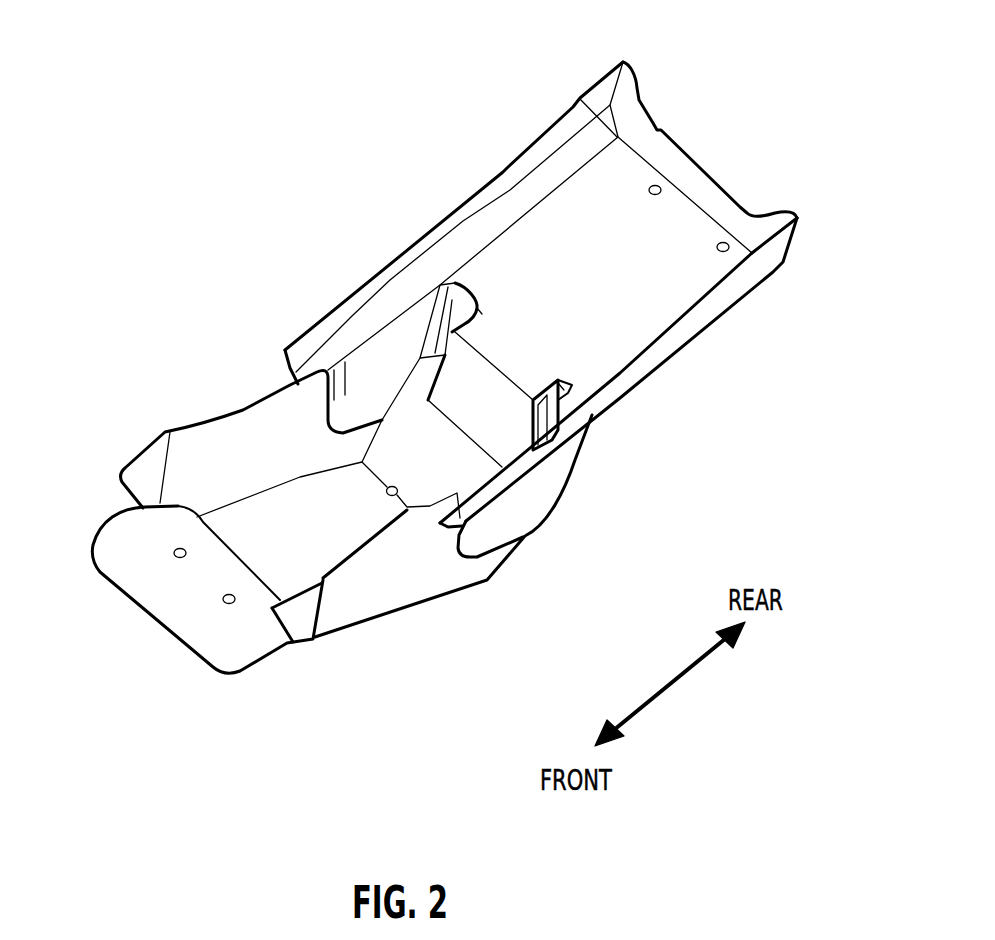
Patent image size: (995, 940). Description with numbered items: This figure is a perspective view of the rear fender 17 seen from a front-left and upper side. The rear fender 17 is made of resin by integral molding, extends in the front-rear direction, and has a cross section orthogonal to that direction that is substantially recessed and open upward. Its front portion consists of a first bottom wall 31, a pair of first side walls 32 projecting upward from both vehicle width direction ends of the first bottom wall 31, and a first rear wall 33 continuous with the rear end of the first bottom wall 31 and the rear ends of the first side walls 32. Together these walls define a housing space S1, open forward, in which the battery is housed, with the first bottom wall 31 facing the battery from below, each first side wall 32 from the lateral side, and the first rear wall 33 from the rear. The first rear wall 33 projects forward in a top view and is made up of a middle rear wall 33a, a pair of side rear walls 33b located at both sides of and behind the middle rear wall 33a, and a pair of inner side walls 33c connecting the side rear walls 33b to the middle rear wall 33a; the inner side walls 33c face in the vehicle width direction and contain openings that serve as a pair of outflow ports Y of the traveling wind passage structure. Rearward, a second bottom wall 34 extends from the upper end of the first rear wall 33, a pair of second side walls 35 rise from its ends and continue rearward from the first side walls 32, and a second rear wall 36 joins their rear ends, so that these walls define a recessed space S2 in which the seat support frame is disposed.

The rear fender 17 is at (303, 224).
The first bottom wall 31 is at (287, 577).
The first side walls 32 is at (228, 437).
The first rear wall 33 is at (667, 322).
The middle rear wall 33a is at (488, 387).
The side rear walls 33b is at (466, 298).
The inner side walls 33c is at (478, 305).
The second bottom wall 34 is at (700, 233).
The second side walls 35 is at (505, 172).
The second rear wall 36 is at (673, 162).
The housing space S1 is at (307, 520).
The recessed space S2 is at (621, 172).
The outflow ports Y is at (557, 452).